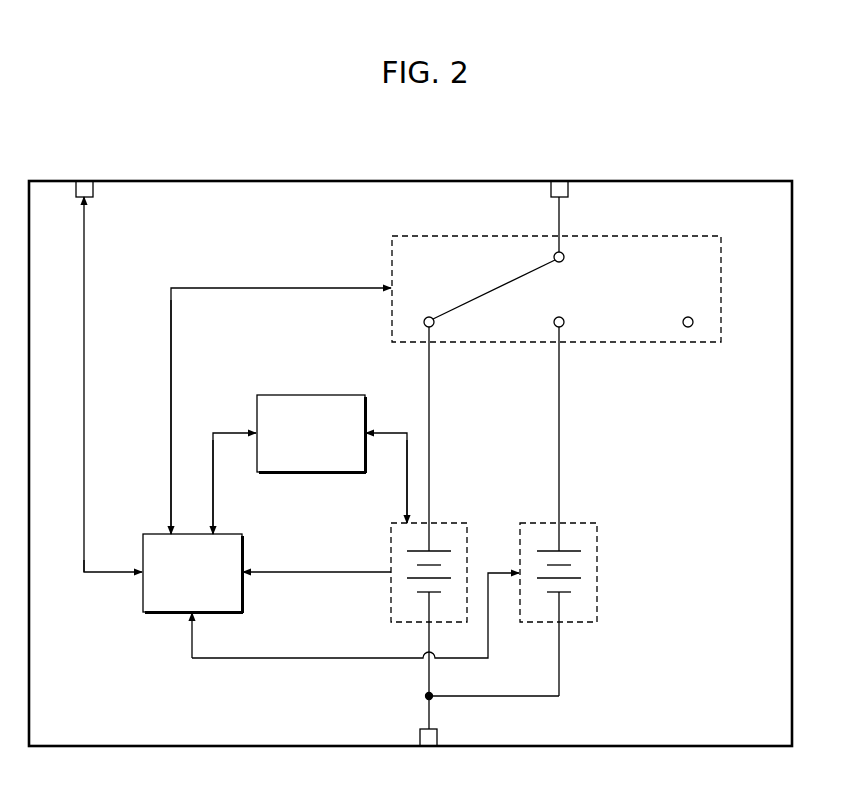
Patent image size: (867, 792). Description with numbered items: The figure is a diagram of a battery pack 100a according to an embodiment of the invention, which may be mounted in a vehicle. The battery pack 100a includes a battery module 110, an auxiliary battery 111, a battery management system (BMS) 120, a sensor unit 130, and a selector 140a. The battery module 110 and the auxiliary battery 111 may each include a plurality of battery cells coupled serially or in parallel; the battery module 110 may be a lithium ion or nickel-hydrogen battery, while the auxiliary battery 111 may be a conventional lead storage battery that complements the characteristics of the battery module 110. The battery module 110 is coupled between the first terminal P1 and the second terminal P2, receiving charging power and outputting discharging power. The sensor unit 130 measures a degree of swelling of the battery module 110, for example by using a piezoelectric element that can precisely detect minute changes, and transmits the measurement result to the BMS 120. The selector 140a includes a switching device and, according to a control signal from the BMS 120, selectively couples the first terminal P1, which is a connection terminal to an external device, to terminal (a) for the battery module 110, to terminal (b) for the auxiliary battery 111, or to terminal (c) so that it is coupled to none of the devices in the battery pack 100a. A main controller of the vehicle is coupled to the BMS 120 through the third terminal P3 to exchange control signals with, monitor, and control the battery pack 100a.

The battery pack 100a is at (643, 182).
The selector 140a is at (643, 236).
The sensor unit 130 is at (340, 394).
The battery management system 120 is at (227, 534).
The battery module 110 is at (445, 523).
The auxiliary battery 111 is at (575, 523).
The first terminal P1 is at (559, 175).
The second terminal P2 is at (429, 752).
The third terminal P3 is at (84, 175).